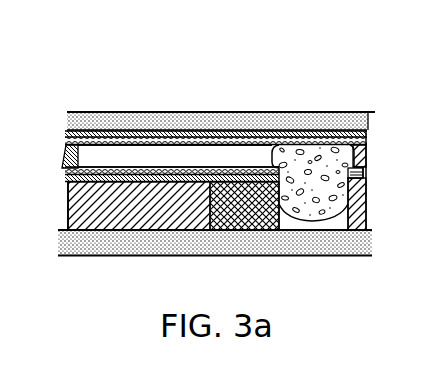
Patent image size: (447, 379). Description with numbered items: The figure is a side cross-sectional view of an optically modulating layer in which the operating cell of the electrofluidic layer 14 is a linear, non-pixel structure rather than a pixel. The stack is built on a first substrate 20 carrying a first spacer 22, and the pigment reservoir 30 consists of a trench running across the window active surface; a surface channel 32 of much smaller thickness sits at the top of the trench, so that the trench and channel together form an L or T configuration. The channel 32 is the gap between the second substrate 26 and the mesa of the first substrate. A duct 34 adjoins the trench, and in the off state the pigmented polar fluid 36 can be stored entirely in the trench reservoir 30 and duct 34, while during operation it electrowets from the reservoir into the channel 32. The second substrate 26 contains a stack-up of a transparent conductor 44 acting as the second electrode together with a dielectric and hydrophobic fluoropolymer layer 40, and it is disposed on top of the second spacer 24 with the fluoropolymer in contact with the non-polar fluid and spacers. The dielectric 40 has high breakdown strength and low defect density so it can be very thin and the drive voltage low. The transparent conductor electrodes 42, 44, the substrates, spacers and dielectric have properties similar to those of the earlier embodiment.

The electrofluidic layer 14 is at (338, 92).
The first substrate 20 is at (128, 240).
The first spacer 22 is at (86, 218).
The second spacer 24 is at (78, 150).
The second substrate 26 is at (342, 124).
The pigment reservoir 30 is at (290, 225).
The surface channel 32 is at (223, 158).
The duct 34 is at (243, 222).
The polar fluid 36 is at (298, 158).
The dielectric film 40 is at (118, 170).
The transparent conductor electrode 42 is at (68, 183).
The transparent conductor 44 is at (157, 142).